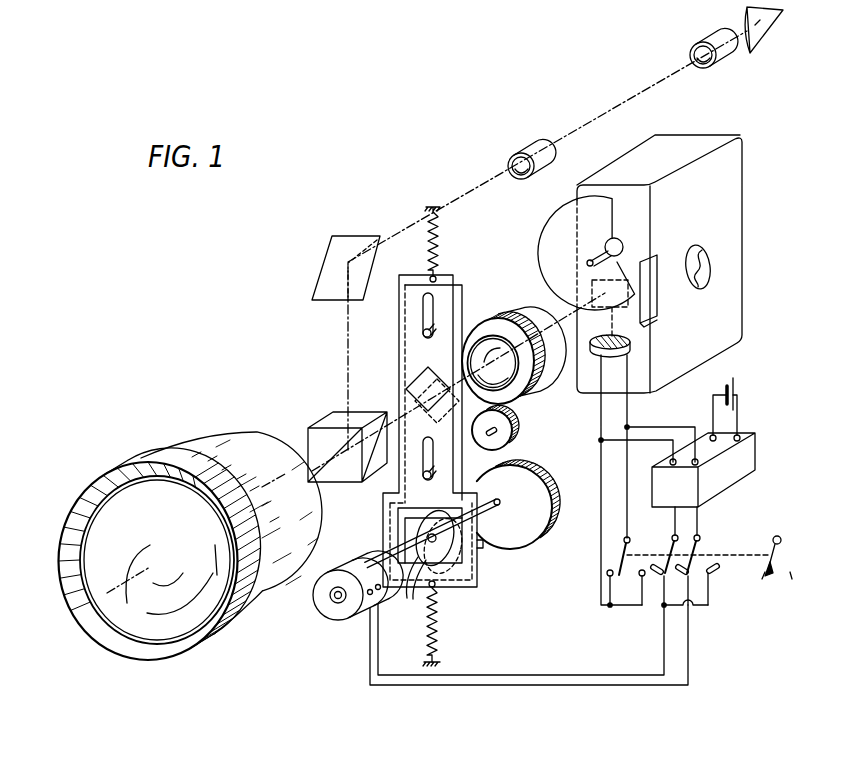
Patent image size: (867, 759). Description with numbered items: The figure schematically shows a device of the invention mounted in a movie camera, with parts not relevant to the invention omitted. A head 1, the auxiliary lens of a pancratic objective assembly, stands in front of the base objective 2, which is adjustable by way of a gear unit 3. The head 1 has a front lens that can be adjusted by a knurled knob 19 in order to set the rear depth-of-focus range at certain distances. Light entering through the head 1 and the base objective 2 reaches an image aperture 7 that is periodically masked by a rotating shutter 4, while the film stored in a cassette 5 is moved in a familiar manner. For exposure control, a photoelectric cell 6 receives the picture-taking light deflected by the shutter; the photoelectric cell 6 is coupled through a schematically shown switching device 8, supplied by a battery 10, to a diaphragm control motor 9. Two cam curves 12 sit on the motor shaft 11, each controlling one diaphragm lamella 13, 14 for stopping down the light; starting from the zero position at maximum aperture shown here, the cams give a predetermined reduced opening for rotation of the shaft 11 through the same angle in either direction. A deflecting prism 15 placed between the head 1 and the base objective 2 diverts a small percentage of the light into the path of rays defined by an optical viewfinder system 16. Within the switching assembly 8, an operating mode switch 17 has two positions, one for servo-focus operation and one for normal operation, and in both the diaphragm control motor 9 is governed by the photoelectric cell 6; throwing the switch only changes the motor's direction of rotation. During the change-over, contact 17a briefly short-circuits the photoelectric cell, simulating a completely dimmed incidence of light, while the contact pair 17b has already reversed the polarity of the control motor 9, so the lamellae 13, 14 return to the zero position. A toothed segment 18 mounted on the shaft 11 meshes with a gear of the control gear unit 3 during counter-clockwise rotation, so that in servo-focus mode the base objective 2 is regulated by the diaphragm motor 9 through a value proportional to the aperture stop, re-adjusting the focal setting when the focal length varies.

The head 1 is at (207, 446).
The base objective 2 is at (525, 306).
The gear unit 3 is at (524, 421).
The rotating shutter 4 is at (580, 227).
The cassette 5 is at (722, 202).
The photoelectric cell 6 is at (590, 352).
The image aperture 7 is at (592, 292).
The switching device 8 is at (747, 462).
The diaphragm control motor 9 is at (328, 610).
The battery 10 is at (740, 387).
The motor shaft 11 is at (410, 588).
The cam curves 12 is at (427, 549).
The diaphragm lamella 13 is at (460, 302).
The diaphragm lamella 14 is at (412, 352).
The deflecting prism 15 is at (333, 430).
The optical viewfinder system 16 is at (532, 147).
The operating mode switch 17 is at (778, 607).
The contact 17a is at (617, 560).
The contact pair 17b is at (690, 548).
The toothed segment 18 is at (513, 468).
The knurled knob 19 is at (240, 598).